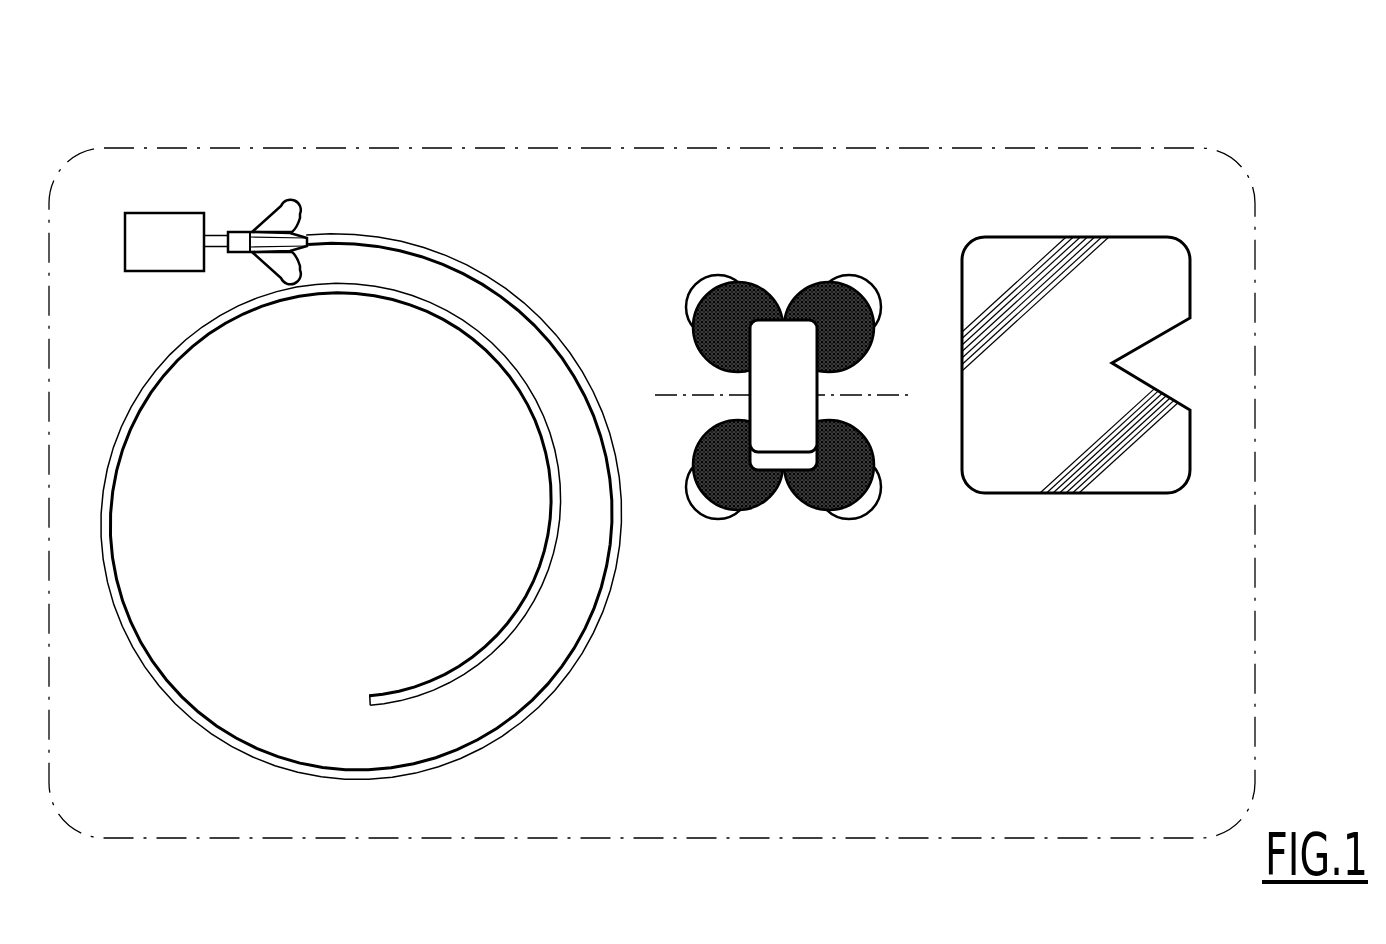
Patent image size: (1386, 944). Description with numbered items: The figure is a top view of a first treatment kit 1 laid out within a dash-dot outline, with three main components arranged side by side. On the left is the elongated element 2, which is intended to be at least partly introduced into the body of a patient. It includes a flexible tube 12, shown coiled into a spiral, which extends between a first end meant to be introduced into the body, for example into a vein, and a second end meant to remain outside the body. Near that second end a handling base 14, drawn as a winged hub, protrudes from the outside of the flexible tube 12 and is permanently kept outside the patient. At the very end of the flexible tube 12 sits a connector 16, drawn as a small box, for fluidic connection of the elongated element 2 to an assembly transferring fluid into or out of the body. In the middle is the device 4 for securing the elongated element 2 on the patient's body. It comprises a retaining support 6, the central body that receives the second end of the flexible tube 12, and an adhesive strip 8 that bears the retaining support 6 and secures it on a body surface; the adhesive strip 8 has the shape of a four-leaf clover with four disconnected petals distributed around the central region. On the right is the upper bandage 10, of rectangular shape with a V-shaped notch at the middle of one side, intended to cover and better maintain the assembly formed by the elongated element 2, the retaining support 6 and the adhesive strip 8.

The treatment kit 1 is at (500, 140).
The elongated element 2 is at (361, 436).
The device for securing the elongated element 4 is at (787, 386).
The retaining support 6 is at (793, 429).
The adhesive strip 8 is at (727, 478).
The upper bandage 10 is at (1025, 467).
The flexible tube 12 is at (531, 297).
The handling base 14 is at (265, 200).
The connector 16 is at (166, 212).